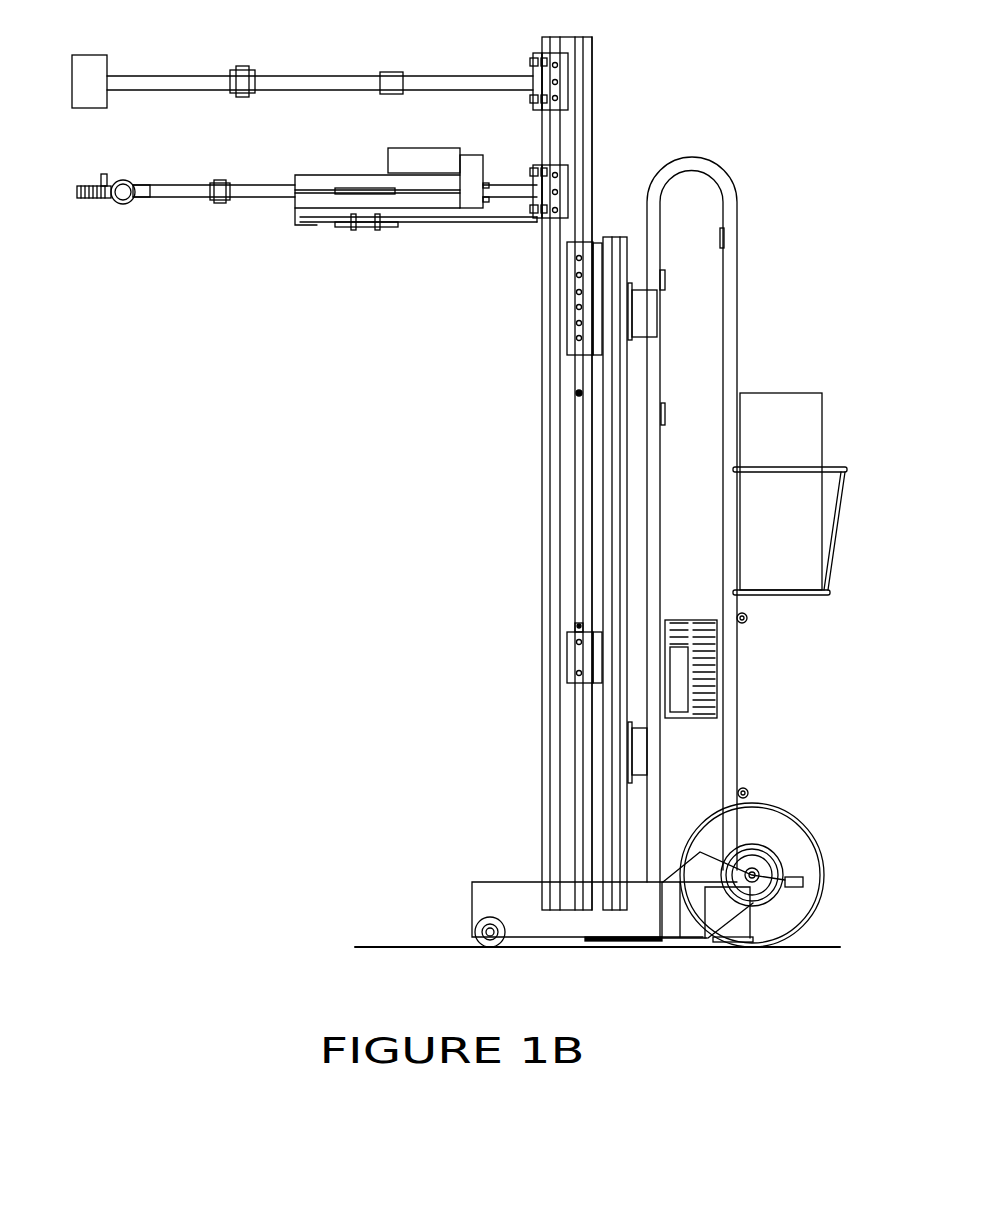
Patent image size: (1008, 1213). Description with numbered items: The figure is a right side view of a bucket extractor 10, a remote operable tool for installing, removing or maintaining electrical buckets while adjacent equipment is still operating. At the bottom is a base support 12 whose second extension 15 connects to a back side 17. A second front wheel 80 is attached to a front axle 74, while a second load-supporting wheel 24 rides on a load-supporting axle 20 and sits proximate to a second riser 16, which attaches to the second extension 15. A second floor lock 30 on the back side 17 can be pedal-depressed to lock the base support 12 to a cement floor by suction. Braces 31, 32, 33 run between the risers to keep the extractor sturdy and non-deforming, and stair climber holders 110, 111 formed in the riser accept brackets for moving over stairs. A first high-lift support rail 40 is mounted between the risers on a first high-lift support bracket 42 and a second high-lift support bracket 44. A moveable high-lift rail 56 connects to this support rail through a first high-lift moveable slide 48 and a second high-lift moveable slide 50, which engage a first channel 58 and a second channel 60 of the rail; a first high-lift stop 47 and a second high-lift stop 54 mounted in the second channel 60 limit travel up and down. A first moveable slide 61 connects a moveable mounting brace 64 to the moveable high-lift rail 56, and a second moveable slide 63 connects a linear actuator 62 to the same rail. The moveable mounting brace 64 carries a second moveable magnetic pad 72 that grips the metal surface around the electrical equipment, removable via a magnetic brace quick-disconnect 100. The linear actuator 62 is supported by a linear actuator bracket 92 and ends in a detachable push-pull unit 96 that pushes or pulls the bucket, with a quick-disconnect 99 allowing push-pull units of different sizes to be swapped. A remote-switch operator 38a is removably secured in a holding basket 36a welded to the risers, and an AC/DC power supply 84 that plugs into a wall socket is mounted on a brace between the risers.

The bucket extractor 10 is at (784, 112).
The base support 12 is at (460, 870).
The second extension 15 is at (490, 897).
The second riser 16 is at (735, 190).
The back side 17 is at (692, 932).
The load-supporting axle 20 is at (755, 868).
The second load-supporting wheel 24 is at (792, 838).
The second floor lock 30 is at (740, 945).
The brace 31 is at (726, 238).
The brace 32 is at (667, 280).
The brace 33 is at (666, 413).
The holding basket 36a is at (840, 468).
The remote-switch operator 38a is at (800, 400).
The first high-lift support rail 40 is at (628, 382).
The first high-lift support bracket 42 is at (640, 315).
The second high-lift support bracket 44 is at (643, 750).
The first high-lift stop 47 is at (576, 396).
The first high-lift moveable slide 48 is at (573, 345).
The second high-lift moveable slide 50 is at (573, 678).
The second high-lift stop 54 is at (577, 628).
The moveable high-lift rail 56 is at (542, 482).
The first channel 58 is at (553, 840).
The second channel 60 is at (580, 805).
The first moveable slide 61 is at (560, 60).
The linear actuator 62 is at (325, 182).
The second moveable slide 63 is at (560, 175).
The moveable mounting brace 64 is at (328, 80).
The second moveable magnetic pad 72 is at (88, 64).
The front axle 74 is at (487, 935).
The second front wheel 80 is at (495, 938).
The AC/DC power supply 84 is at (690, 625).
The linear actuator bracket 92 is at (313, 226).
The detachable push-pull unit 96 is at (127, 180).
The quick-disconnect 99 is at (222, 183).
The magnetic brace quick-disconnect 100 is at (242, 70).
The stair climber holder 110 is at (748, 616).
The stair climber holder 111 is at (748, 791).